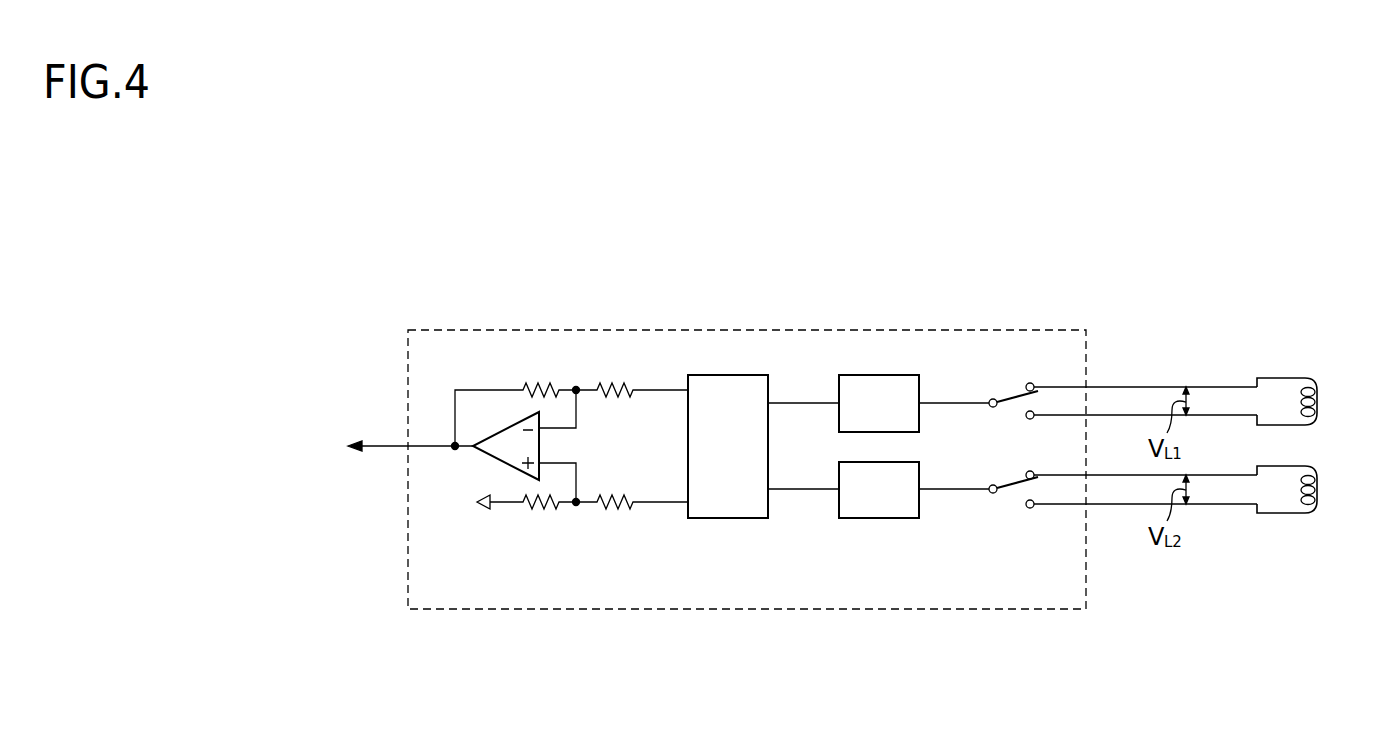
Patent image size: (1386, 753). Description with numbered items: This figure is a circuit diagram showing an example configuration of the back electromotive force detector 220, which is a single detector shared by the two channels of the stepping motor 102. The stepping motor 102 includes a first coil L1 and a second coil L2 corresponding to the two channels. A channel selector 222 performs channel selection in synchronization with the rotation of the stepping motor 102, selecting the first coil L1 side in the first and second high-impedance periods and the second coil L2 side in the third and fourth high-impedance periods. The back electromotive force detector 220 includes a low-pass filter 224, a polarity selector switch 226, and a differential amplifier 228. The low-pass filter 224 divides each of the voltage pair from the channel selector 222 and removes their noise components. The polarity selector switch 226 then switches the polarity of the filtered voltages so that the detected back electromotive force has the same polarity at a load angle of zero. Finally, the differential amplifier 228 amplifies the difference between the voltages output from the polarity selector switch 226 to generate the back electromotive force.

The back electromotive force detector 220 is at (785, 609).
The differential amplifier 228 is at (658, 535).
The polarity selector switch 226 is at (728, 518).
The low-pass filter 224 is at (825, 535).
The channel selector 222 is at (973, 535).
The stepping motor 102 is at (1306, 485).
The first coil L1 is at (1323, 401).
The second coil L2 is at (1313, 489).